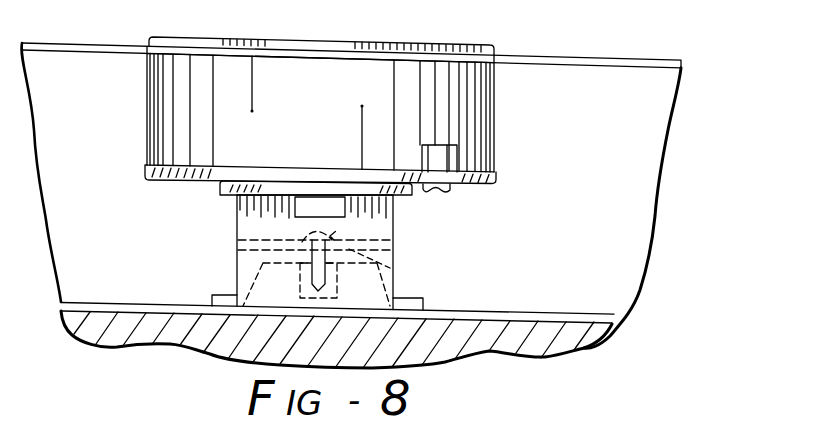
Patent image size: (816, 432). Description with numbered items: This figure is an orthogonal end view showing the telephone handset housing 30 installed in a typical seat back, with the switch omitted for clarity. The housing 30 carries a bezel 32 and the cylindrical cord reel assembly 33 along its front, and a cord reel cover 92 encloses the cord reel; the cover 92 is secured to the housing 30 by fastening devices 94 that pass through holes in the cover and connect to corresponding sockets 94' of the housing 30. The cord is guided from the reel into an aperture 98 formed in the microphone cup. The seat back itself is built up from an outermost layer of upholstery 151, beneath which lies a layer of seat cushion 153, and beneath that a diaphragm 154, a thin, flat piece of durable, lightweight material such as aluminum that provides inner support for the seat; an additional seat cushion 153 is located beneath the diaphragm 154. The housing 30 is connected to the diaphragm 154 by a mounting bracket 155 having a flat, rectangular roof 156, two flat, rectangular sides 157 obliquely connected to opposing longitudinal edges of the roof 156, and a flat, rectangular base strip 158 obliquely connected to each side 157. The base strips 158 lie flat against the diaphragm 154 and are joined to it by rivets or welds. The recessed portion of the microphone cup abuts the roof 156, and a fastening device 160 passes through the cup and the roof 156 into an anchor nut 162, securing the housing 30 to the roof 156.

The telephone handset housing 30 is at (137, 122).
The bezel 32 is at (352, 44).
The cord reel assembly 33 is at (494, 107).
The cord reel cover 92 is at (147, 182).
The fastening devices 94 is at (464, 201).
The sockets 94' is at (426, 140).
The aperture 98 is at (316, 208).
The upholstery 151 is at (631, 59).
The seat cushion 153 is at (653, 116).
The diaphragm 154 is at (604, 290).
The mounting bracket 155 is at (392, 267).
The roof 156 is at (344, 306).
The sides 157 is at (260, 266).
The base strips 158 is at (213, 294).
The fastening device 160 is at (330, 237).
The anchor nut 162 is at (298, 298).